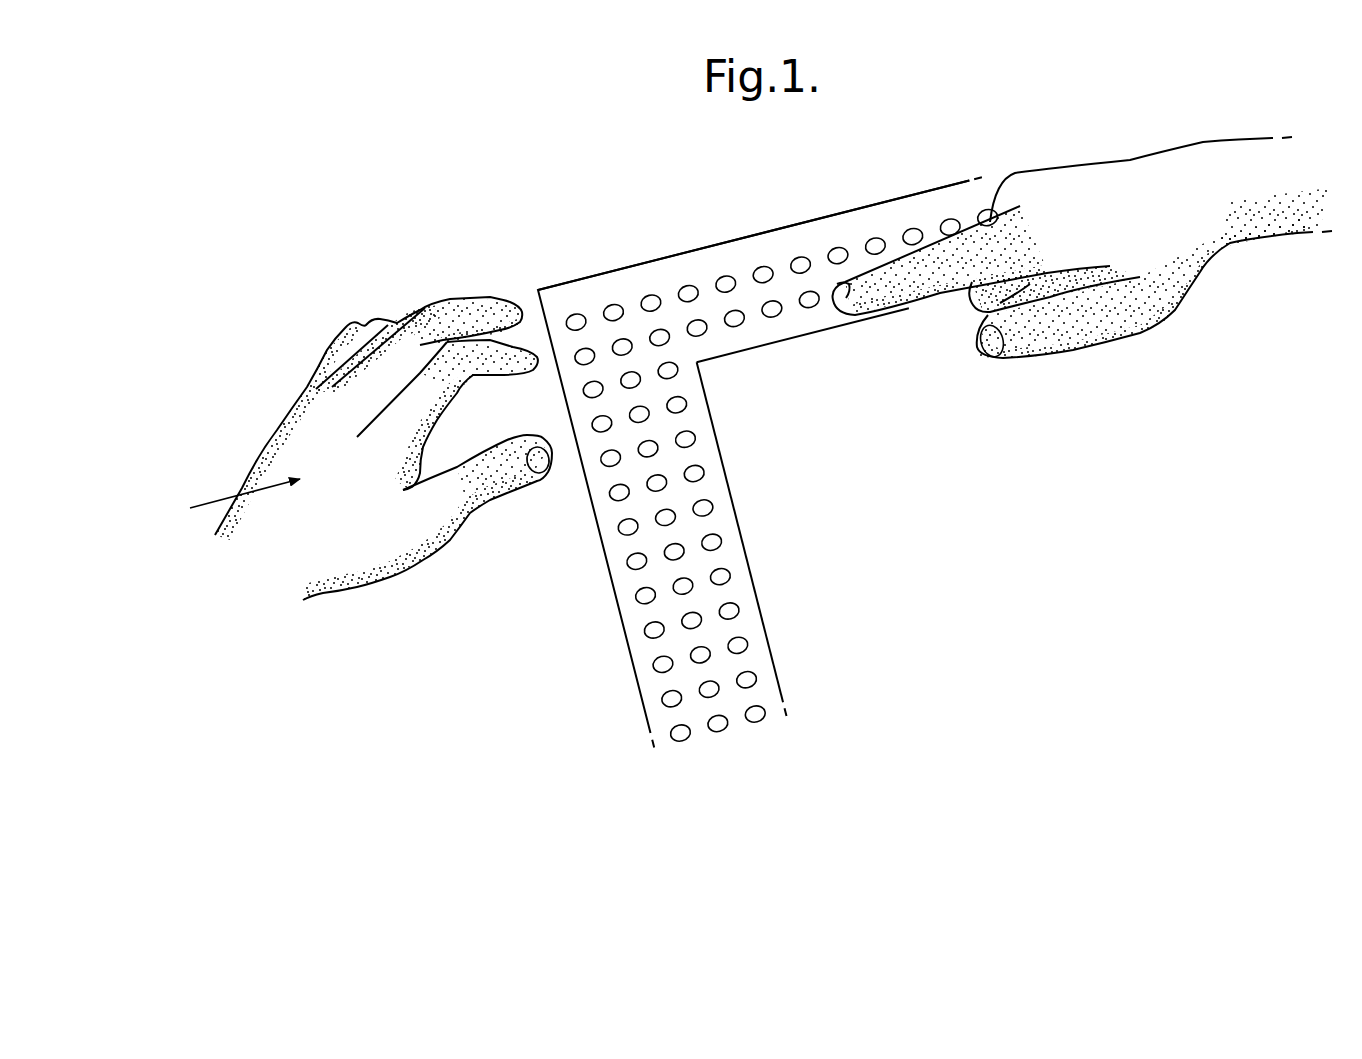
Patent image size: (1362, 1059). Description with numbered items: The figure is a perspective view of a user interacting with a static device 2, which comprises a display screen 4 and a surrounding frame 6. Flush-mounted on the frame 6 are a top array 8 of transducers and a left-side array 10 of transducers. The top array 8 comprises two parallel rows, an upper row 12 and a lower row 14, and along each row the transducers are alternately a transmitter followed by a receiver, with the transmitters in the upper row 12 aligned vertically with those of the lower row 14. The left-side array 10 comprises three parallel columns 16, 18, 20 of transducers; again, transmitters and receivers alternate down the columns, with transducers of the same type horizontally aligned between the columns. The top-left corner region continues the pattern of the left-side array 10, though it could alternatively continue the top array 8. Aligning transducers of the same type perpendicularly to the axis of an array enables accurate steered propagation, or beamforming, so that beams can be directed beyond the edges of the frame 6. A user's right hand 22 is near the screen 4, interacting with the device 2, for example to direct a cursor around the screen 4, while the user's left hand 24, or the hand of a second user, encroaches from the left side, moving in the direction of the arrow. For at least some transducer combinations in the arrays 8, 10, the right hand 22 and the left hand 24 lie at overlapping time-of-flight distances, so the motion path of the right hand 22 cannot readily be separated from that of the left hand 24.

The static device 2 is at (602, 247).
The display screen 4 is at (820, 480).
The surrounding frame 6 is at (708, 255).
The top array 8 is at (769, 259).
The left-side array 10 is at (613, 513).
The upper row 12 is at (926, 224).
The lower row 14 is at (783, 311).
The column 16 is at (684, 746).
The column 18 is at (728, 743).
The column 20 is at (764, 728).
The right hand 22 is at (1115, 178).
The left hand 24 is at (290, 430).